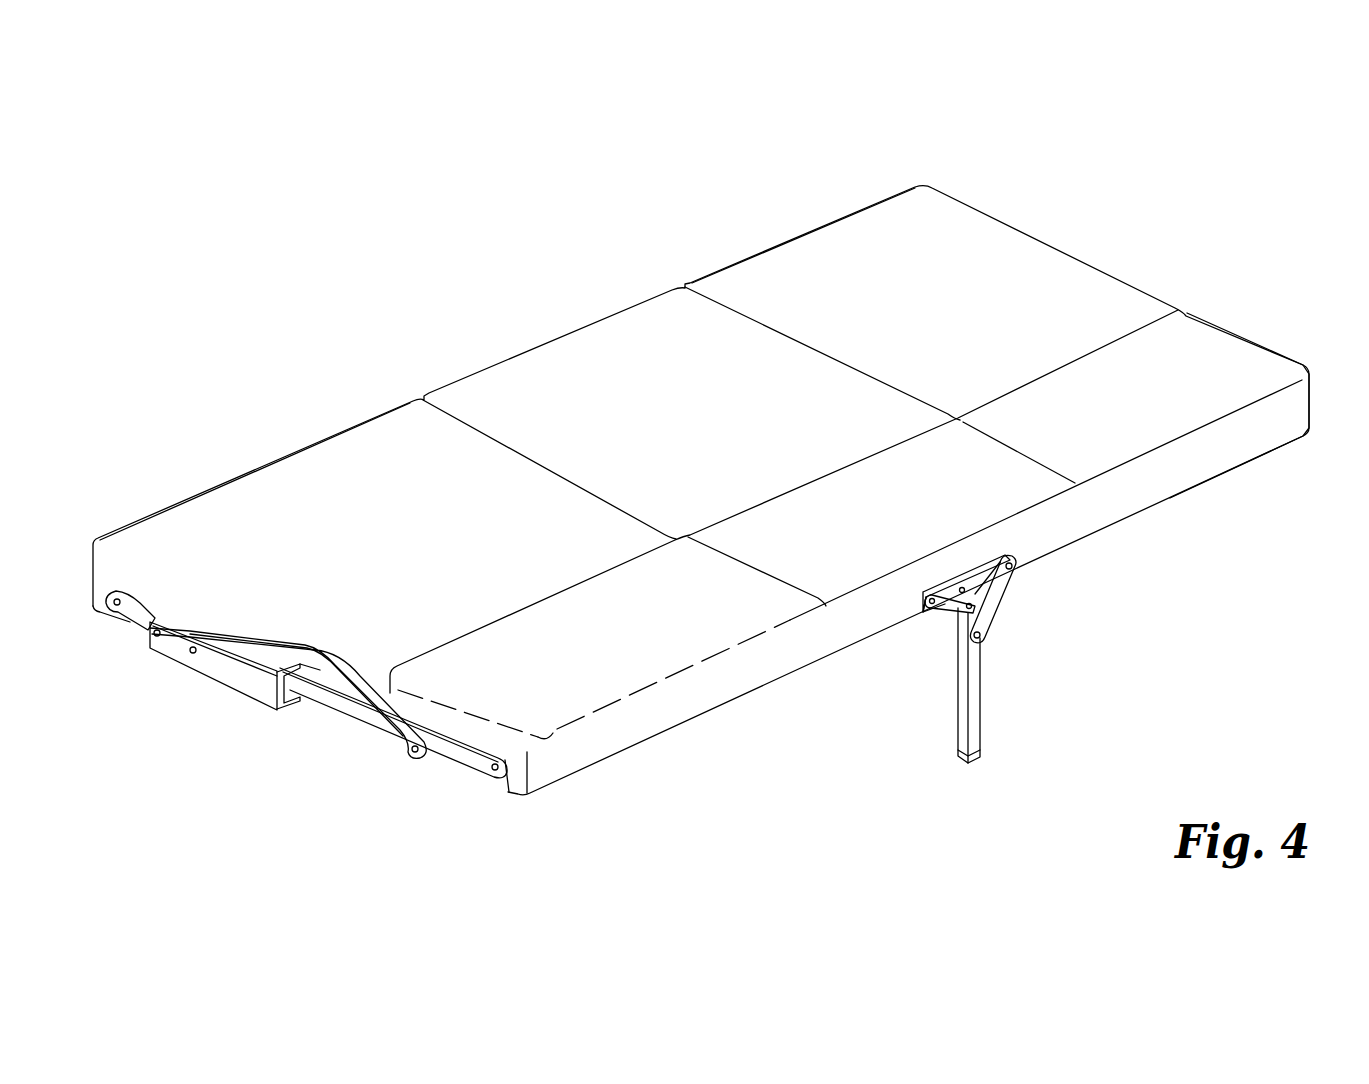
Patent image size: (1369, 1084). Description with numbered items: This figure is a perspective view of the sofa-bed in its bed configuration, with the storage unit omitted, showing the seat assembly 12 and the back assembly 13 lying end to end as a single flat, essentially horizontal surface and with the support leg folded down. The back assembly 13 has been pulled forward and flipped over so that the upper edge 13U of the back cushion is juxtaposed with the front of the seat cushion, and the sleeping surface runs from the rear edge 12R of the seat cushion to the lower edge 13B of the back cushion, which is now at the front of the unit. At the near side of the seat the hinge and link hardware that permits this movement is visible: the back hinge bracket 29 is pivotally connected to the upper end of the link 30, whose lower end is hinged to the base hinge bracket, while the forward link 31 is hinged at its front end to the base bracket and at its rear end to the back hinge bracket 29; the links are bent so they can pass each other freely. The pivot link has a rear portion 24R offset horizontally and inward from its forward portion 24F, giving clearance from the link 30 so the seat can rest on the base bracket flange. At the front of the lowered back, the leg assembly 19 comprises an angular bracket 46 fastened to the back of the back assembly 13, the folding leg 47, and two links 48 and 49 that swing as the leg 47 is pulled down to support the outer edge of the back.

The seat assembly 12 is at (730, 482).
The rear edge of the seat cushion 12R is at (273, 462).
The back assembly 13 is at (1026, 343).
The upper edge of the back cushion 13U is at (1172, 313).
The lower edge of the back cushion 13B is at (1290, 405).
The rear portion of the pivot link 24R is at (126, 595).
The forward portion of the pivot link 24F is at (140, 623).
The back hinge bracket 29 is at (452, 758).
The link 30 is at (381, 728).
The forward link 31 is at (308, 689).
The leg assembly 19 is at (1021, 647).
The bracket 46 is at (980, 583).
The folding leg 47 is at (1006, 685).
The link 48 is at (1000, 600).
The link 49 is at (956, 608).